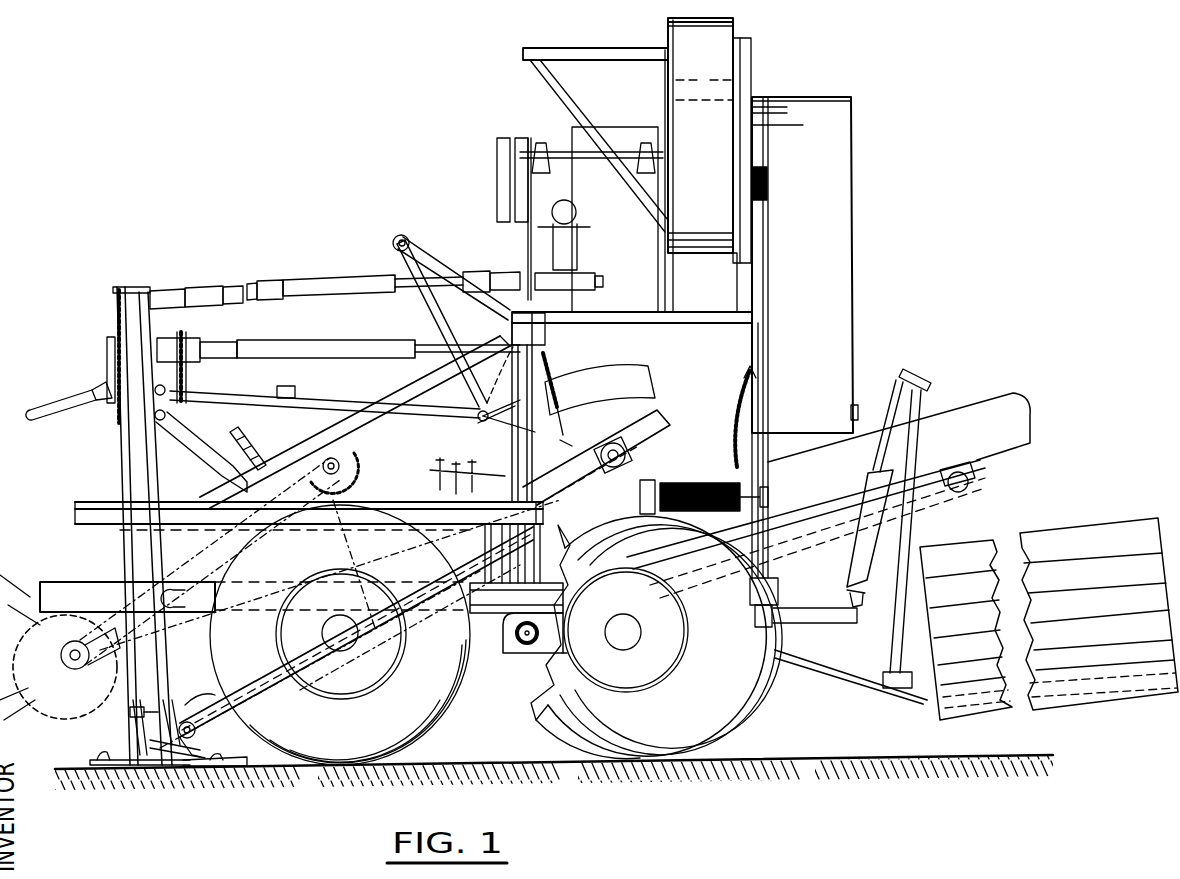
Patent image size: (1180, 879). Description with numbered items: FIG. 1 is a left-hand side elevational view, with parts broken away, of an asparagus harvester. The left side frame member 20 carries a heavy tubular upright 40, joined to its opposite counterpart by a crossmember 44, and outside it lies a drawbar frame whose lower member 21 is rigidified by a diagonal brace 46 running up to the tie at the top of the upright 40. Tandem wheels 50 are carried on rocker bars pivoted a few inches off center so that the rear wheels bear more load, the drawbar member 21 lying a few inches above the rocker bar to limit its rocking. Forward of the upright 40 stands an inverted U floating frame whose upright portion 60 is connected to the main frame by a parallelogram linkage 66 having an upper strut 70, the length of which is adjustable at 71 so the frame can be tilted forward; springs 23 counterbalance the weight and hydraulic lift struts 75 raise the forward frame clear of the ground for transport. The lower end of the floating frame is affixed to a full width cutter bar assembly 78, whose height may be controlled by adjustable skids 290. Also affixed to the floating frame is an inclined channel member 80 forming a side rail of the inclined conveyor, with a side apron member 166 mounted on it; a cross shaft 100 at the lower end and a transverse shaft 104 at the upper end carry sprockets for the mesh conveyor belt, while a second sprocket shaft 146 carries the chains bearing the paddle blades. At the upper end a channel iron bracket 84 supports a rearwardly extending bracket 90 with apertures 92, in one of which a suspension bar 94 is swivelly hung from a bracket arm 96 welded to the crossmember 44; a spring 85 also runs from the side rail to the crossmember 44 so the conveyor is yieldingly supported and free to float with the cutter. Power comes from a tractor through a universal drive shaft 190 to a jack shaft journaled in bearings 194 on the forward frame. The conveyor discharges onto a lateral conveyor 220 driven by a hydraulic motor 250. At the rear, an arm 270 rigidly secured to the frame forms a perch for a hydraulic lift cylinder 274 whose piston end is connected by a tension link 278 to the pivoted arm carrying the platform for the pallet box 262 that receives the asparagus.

The left side frame member 20 is at (508, 643).
The draw bar frame member 21 is at (780, 585).
The springs 23 is at (433, 478).
The heavy tubular upright 40 is at (640, 422).
The crossmember 44 is at (540, 317).
The diagonal brace 46 is at (418, 405).
The tandem wheels 50 is at (420, 735).
The upright portion 60 is at (157, 442).
The parallelogram linkage 66 is at (290, 403).
The upper strut 70 is at (351, 410).
The strut length adjustment 71 is at (293, 372).
The hydraulic lift struts 75 is at (213, 447).
The cutter bar assembly 78 is at (97, 757).
The channel member 80 is at (192, 738).
The channel iron bracket 84 is at (478, 422).
The spring 85 is at (647, 380).
The bracket 90 is at (532, 348).
The apertures 92 is at (546, 430).
The suspension bar 94 is at (400, 253).
The bracket arm 96 is at (443, 250).
The cross shaft 100 is at (198, 768).
The transverse shaft 104 is at (625, 448).
The second sprocket shaft 146 is at (72, 663).
The side apron member 166 is at (253, 718).
The universal drive shaft 190 is at (95, 396).
The bearings 194 is at (61, 431).
The lateral conveyor 220 is at (722, 482).
The hydraulic motor 250 is at (633, 467).
The pallet box 262 is at (1103, 690).
The arm 270 is at (800, 603).
The hydraulic lift cylinder 274 is at (869, 583).
The tension link 278 is at (828, 495).
The adjustable height skids 290 is at (213, 770).